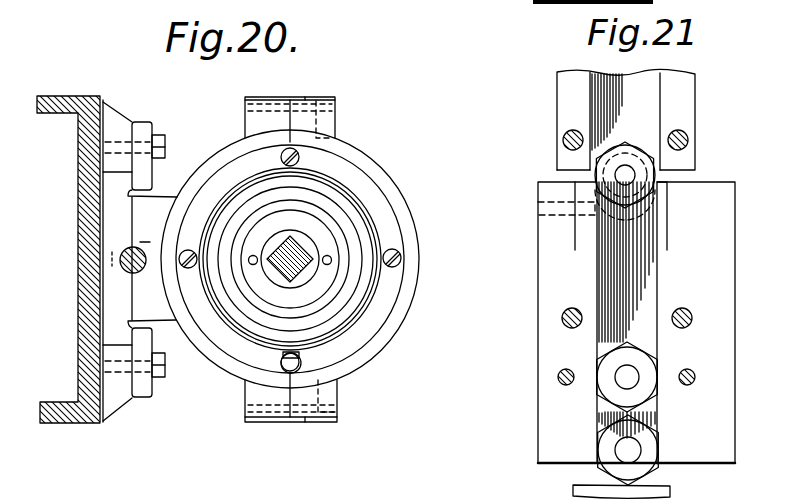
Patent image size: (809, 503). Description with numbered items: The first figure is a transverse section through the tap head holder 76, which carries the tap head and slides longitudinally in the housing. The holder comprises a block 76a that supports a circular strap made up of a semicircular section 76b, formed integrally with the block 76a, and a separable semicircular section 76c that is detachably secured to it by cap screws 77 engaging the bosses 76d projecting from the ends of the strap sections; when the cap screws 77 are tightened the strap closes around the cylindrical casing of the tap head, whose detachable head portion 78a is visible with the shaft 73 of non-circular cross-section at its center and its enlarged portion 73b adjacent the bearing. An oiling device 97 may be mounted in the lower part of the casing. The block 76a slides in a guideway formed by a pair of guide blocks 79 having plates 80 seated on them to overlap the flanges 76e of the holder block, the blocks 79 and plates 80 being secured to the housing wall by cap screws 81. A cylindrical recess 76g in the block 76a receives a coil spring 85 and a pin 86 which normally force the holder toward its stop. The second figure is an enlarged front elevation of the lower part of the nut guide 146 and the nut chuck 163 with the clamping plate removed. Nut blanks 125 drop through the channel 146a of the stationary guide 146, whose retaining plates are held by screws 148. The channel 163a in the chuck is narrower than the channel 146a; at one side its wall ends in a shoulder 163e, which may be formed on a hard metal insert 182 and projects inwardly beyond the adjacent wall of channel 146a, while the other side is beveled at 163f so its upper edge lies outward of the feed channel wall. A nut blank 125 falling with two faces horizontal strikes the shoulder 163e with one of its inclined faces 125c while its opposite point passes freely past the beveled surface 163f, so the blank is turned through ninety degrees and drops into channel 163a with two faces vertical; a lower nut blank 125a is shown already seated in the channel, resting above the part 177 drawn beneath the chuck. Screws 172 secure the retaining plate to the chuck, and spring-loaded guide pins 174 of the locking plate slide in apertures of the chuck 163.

In FIG. 20, the holder 76 is at (389, 153).
In FIG. 20, the block 76a is at (130, 218).
In FIG. 20, the semicircular section 76b is at (228, 147).
In FIG. 20, the separable semicircular section 76c is at (417, 211).
In FIG. 20, the bosses 76d is at (362, 432).
In FIG. 20, the flanges 76e is at (115, 331).
In FIG. 20, the cylindrical recess 76g is at (146, 249).
In FIG. 20, the cap screws 77 is at (303, 98).
In FIG. 20, the detachable head portion 78a is at (360, 261).
In FIG. 20, the guide blocks 79 is at (107, 103).
In FIG. 20, the plates 80 is at (143, 121).
In FIG. 20, the cap screws 81 is at (165, 133).
In FIG. 20, the coil spring 85 is at (118, 259).
In FIG. 20, the pin 86 is at (139, 273).
In FIG. 20, the oiling device 97 is at (330, 241).
In FIG. 20, the shaft 73 is at (300, 267).
In FIG. 20, the enlarged portion 73b is at (300, 238).
In FIG. 21, the vertical guide 146 is at (556, 98).
In FIG. 21, the channel 146a is at (608, 75).
In FIG. 21, the screws 148 is at (570, 134).
In FIG. 21, the nut blanks 125 is at (641, 155).
In FIG. 21, the lower lock nut 125a is at (643, 442).
In FIG. 21, the inclined faces 125c is at (652, 200).
In FIG. 21, the nut chuck 163 is at (724, 242).
In FIG. 21, the channel 163a is at (612, 273).
In FIG. 21, the shoulder 163e is at (570, 183).
In FIG. 21, the beveled surface 163f is at (660, 190).
In FIG. 21, the hard metal insert 182 is at (580, 231).
In FIG. 21, the screws 172 is at (560, 316).
In FIG. 21, the guide pins 174 is at (557, 373).
In FIG. 21, the base plate 177 is at (577, 487).